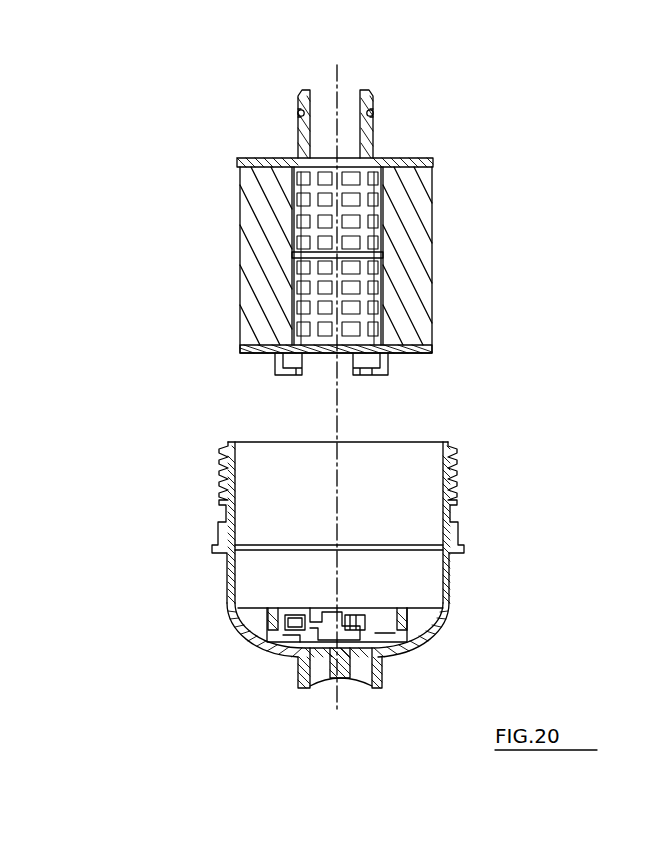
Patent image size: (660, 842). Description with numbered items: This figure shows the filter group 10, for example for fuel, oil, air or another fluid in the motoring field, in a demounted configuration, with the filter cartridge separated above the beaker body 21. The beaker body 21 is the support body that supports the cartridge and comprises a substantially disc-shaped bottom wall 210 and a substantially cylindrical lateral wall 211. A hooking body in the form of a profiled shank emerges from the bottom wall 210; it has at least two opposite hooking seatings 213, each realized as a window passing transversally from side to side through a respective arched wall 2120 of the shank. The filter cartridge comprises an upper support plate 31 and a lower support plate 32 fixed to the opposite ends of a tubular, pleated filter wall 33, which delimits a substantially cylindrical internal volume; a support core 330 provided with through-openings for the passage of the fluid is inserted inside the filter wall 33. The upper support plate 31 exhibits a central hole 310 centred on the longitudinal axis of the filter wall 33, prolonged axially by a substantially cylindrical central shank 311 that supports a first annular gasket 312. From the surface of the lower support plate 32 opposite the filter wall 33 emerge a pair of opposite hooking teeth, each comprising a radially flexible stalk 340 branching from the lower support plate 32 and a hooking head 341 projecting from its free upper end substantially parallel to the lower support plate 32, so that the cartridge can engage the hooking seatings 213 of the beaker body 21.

The filter group 10 is at (146, 345).
The upper support plate 31 is at (435, 158).
The central shank 311 is at (375, 140).
The first annular gasket 312 is at (375, 112).
The lower support plate 32 is at (258, 343).
The filter wall 33 is at (413, 248).
The central hole 310 is at (385, 190).
The support core 330 is at (383, 232).
The stalk 340 is at (293, 357).
The hooking head 341 is at (293, 367).
The beaker body 21 is at (447, 622).
The lateral wall 211 is at (448, 563).
The bottom wall 210 is at (405, 645).
The hooking seating 213 is at (293, 622).
The arched wall 2120 is at (302, 638).